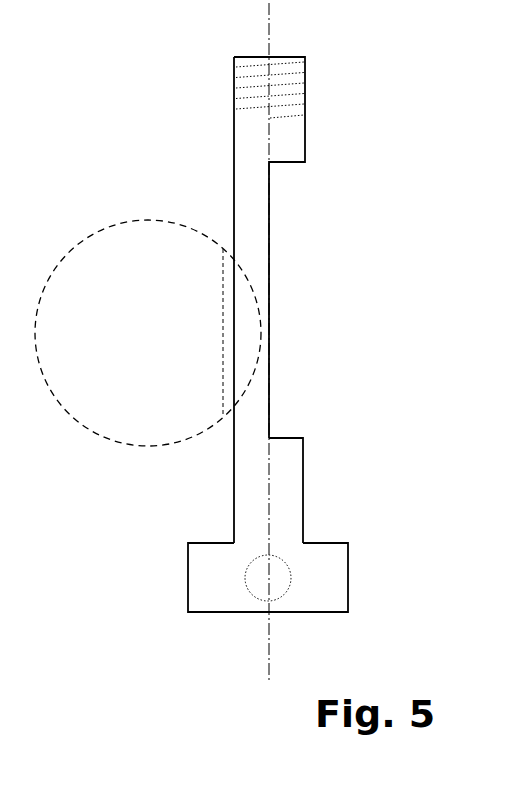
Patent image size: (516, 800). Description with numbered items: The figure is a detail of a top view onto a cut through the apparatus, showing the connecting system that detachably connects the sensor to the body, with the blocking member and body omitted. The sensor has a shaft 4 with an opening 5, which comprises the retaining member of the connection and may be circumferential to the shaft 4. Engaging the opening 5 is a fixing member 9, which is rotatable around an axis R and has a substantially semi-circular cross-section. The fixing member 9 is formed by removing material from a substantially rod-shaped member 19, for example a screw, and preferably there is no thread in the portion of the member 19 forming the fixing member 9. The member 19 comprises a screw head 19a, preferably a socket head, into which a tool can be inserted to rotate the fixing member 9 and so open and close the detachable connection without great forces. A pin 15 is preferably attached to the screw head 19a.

The axis R is at (269, 24).
The shaft 4 is at (119, 220).
The opening 5 is at (230, 263).
The fixing member 9 is at (245, 324).
The rod-shaped member 19 is at (290, 497).
The screw head 19a is at (348, 577).
The pin 15 is at (244, 577).